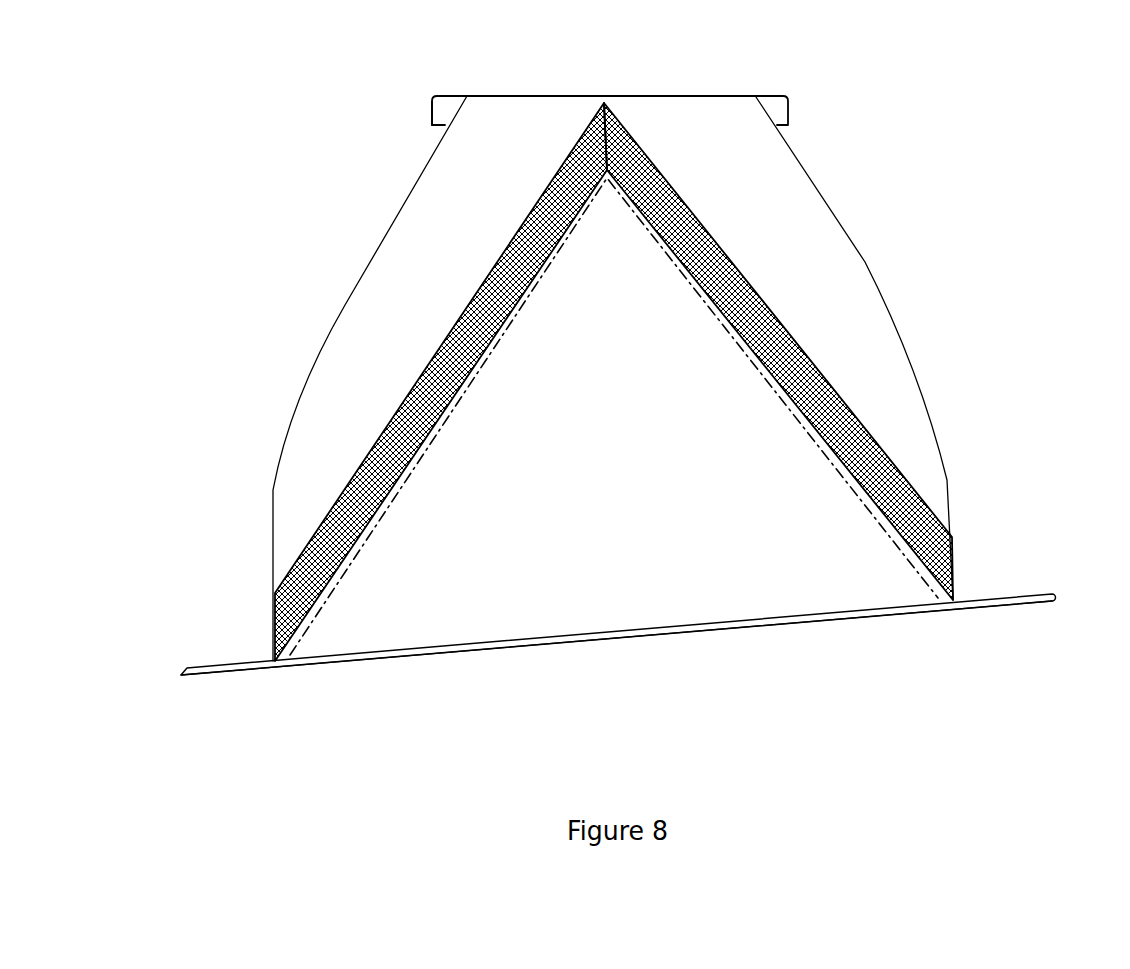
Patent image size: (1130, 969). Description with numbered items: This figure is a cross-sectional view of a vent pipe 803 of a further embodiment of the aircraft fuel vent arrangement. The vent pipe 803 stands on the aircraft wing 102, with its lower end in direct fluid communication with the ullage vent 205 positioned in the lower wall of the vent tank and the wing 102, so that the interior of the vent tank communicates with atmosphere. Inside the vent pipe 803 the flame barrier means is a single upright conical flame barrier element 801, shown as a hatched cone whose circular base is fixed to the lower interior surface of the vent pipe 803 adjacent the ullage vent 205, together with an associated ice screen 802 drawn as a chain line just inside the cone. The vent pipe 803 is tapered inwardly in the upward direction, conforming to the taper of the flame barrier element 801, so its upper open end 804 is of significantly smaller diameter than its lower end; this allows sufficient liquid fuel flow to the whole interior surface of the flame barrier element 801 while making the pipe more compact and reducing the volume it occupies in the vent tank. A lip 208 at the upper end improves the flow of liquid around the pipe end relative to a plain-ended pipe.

The aircraft wing 102 is at (207, 665).
The ullage vent 205 is at (893, 614).
The lip 208 is at (432, 126).
The conical flame barrier element 801 is at (442, 344).
The ice screen 802 is at (380, 520).
The vent pipe 803 is at (290, 412).
The upper open end 804 is at (722, 100).